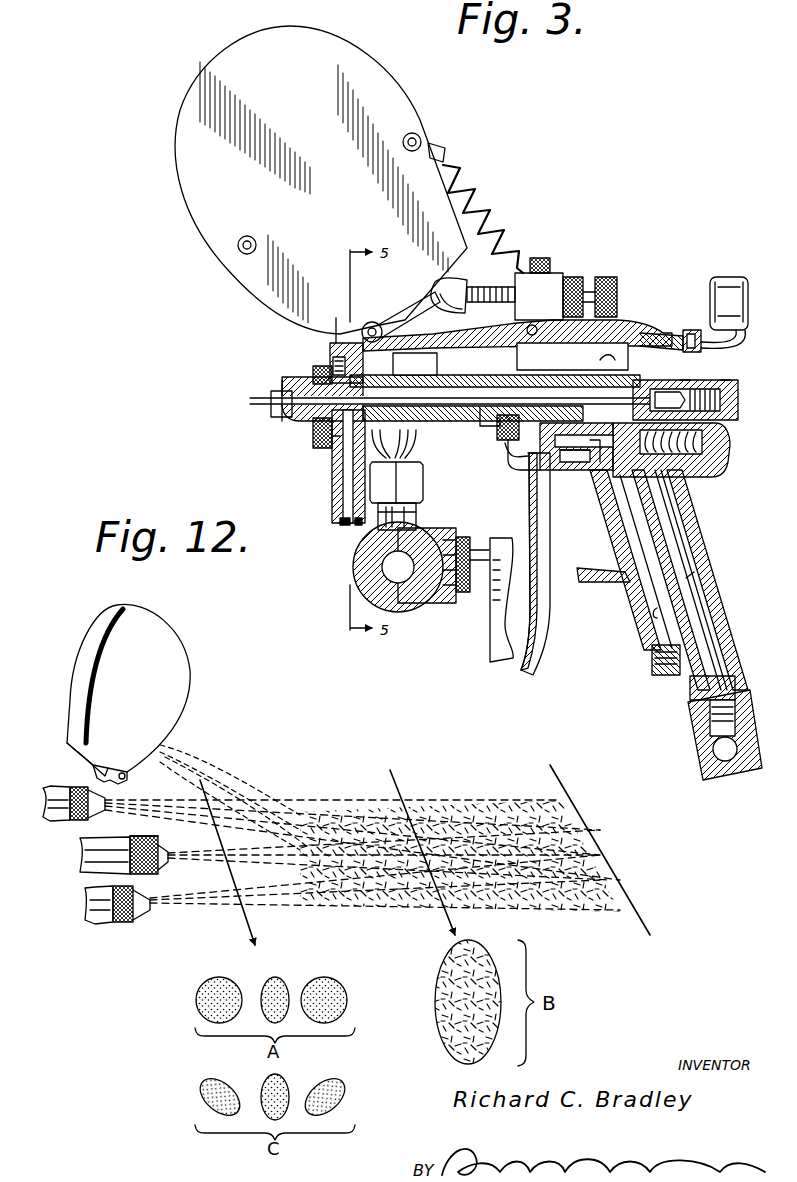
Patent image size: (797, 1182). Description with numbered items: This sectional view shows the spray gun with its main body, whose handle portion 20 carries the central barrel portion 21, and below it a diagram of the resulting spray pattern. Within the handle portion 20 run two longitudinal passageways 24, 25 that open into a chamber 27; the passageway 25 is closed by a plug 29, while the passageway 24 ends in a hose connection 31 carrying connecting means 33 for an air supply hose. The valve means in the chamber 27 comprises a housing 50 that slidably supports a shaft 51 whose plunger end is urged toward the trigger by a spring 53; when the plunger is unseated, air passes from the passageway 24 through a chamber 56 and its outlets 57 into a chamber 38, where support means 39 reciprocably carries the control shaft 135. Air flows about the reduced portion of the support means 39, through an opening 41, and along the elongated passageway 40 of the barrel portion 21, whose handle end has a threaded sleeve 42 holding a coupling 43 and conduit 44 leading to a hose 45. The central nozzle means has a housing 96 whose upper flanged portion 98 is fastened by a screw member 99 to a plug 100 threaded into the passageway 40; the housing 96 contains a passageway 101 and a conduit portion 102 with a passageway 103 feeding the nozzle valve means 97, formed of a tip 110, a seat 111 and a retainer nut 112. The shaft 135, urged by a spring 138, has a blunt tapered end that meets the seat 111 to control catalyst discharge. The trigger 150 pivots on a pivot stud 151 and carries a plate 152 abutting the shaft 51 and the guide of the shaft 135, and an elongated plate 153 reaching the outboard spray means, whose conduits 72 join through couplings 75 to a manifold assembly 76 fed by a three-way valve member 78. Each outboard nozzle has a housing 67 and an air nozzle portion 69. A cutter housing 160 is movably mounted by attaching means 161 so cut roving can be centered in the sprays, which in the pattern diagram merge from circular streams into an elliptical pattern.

In FIG. 3, the housing 160 is at (185, 183).
In FIG. 3, the attaching means 161 is at (438, 285).
In FIG. 3, the pivot stud 151 is at (534, 326).
In FIG. 3, the central barrel portion 21 is at (627, 321).
In FIG. 3, the plug 100 is at (415, 364).
In FIG. 3, the elongated passageway 40 is at (585, 348).
In FIG. 3, the opening 41 is at (612, 354).
In FIG. 3, the tip 110 is at (269, 402).
In FIG. 3, the nozzle valve means 97 is at (278, 424).
In FIG. 12, the nozzle valve means 97 is at (150, 836).
In FIG. 3, the retainer nut 112 is at (313, 372).
In FIG. 3, the seat 111 is at (284, 385).
In FIG. 3, the air nozzle portion 69 is at (312, 442).
In FIG. 12, the air nozzle portion 69 is at (86, 790).
In FIG. 3, the housing 96 is at (325, 345).
In FIG. 12, the housing 96 is at (80, 850).
In FIG. 3, the upper flanged portion 98 is at (336, 330).
In FIG. 3, the screw member 99 is at (333, 360).
In FIG. 3, the conduit portion 102 is at (332, 488).
In FIG. 3, the passageway 101 is at (330, 445).
In FIG. 3, the passageway 103 is at (342, 503).
In FIG. 3, the conduit 72 is at (416, 452).
In FIG. 3, the coupling 75 is at (416, 513).
In FIG. 3, the manifold assembly 76 is at (352, 578).
In FIG. 3, the three-way valve member 78 is at (478, 537).
In FIG. 3, the shaft 135 is at (483, 426).
In FIG. 3, the elongated plate 153 is at (500, 438).
In FIG. 3, the plate 152 is at (506, 455).
In FIG. 3, the shaft 51 is at (518, 462).
In FIG. 3, the spring 138 is at (738, 400).
In FIG. 3, the chamber 38 is at (690, 381).
In FIG. 3, the support means 39 is at (730, 381).
In FIG. 3, the threaded sleeve 42 is at (667, 333).
In FIG. 3, the coupling 43 is at (692, 330).
In FIG. 3, the hose 45 is at (749, 289).
In FIG. 3, the conduit 44 is at (742, 340).
In FIG. 3, the chamber 27 is at (690, 460).
In FIG. 3, the spring 53 is at (728, 445).
In FIG. 3, the housing 50 is at (575, 452).
In FIG. 3, the outlets 57 is at (580, 462).
In FIG. 3, the chamber 56 is at (598, 465).
In FIG. 3, the trigger 150 is at (547, 614).
In FIG. 3, the handle portion 20 is at (722, 608).
In FIG. 3, the passageway 24 is at (700, 576).
In FIG. 3, the passageway 25 is at (650, 626).
In FIG. 3, the plug 29 is at (665, 676).
In FIG. 3, the hose connection 31 is at (738, 685).
In FIG. 3, the connecting means 33 is at (720, 780).
In FIG. 12, the housing 67 is at (50, 796).